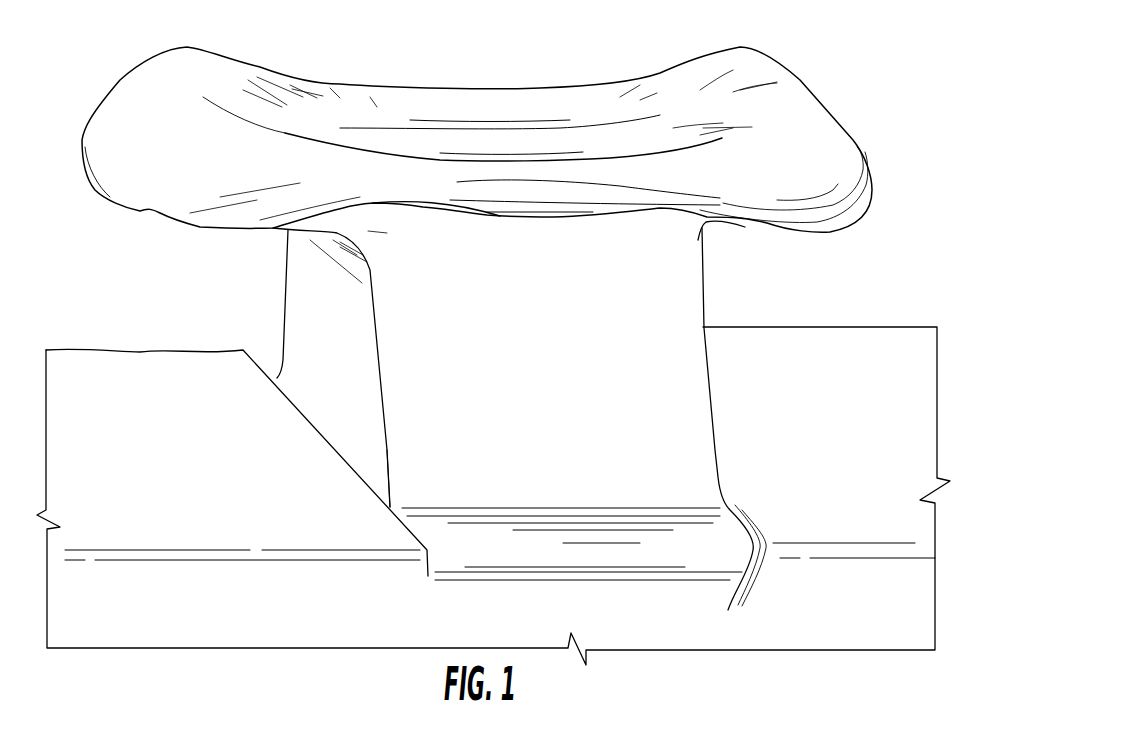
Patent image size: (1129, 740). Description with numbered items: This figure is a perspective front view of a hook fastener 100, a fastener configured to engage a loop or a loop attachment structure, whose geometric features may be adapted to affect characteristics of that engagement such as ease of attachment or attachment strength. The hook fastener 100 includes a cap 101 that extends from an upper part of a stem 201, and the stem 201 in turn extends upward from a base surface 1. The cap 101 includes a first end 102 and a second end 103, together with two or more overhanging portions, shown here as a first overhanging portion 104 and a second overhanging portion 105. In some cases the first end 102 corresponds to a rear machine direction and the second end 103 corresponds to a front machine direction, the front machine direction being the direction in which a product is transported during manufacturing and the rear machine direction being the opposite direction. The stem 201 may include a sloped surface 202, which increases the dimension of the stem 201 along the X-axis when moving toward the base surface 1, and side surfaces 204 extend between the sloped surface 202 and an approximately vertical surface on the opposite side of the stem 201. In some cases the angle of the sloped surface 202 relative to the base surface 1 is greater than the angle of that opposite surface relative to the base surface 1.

The base surface 1 is at (172, 490).
The hook fastener 100 is at (840, 62).
The cap 101 is at (237, 72).
The first end 102 is at (455, 95).
The second end 103 is at (527, 183).
The first overhanging portion 104 is at (825, 138).
The second overhanging portion 105 is at (122, 142).
The stem 201 is at (542, 418).
The sloped surface 202 is at (453, 438).
The side surfaces 204 is at (337, 357).